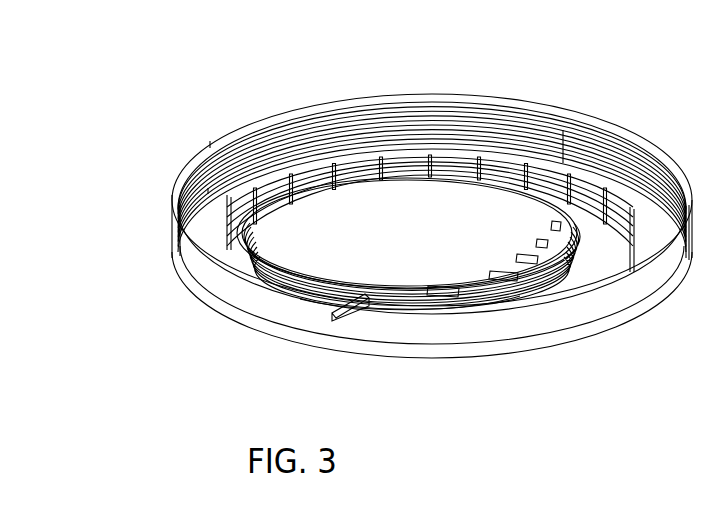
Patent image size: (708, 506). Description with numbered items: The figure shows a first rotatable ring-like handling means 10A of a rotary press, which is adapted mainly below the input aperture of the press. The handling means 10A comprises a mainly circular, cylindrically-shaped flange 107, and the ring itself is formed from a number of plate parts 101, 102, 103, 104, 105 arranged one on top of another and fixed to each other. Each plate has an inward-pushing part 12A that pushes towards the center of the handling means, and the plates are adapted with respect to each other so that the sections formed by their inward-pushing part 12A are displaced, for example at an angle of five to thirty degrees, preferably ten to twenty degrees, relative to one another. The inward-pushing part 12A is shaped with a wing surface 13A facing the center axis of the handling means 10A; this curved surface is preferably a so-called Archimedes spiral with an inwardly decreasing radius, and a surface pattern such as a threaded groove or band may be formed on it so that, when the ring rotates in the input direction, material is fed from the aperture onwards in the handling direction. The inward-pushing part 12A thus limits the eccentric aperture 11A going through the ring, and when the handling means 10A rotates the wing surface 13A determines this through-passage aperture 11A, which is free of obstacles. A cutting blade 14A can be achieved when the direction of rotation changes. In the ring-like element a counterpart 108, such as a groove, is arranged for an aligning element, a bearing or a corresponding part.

The ring-like handling means 10A is at (208, 111).
The eccentric aperture 11A is at (403, 230).
The inward-pushing part 12A is at (374, 318).
The wing surface 13A is at (258, 266).
The cutting blade 14A is at (355, 305).
The plate part 101 is at (402, 325).
The plate part 102 is at (440, 305).
The plate part 103 is at (485, 297).
The plate part 104 is at (510, 285).
The plate part 105 is at (530, 260).
The flange 107 is at (168, 198).
The counterpart 108 is at (207, 253).